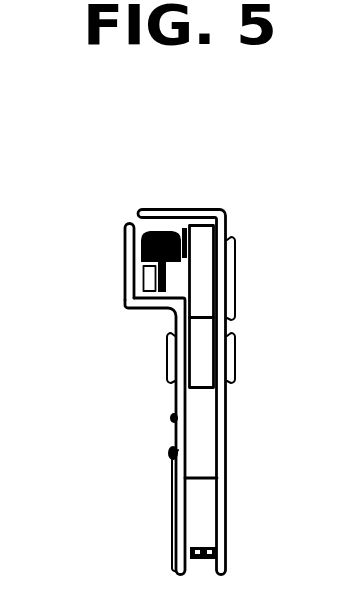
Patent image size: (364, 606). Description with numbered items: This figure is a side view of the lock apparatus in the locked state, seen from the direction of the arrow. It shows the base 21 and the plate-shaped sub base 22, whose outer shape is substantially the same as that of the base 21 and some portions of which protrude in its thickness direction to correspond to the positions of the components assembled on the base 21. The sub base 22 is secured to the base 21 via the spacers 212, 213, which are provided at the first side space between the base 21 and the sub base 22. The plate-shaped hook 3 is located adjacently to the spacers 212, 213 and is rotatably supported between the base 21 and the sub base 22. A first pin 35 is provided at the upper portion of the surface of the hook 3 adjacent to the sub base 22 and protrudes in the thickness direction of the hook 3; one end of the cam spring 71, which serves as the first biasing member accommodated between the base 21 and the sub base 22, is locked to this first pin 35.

The base 21 is at (180, 204).
The sub base 22 is at (137, 292).
The first pin 35 is at (128, 295).
The cam spring 71 is at (150, 242).
The spacer 212 is at (212, 333).
The hook 3 is at (190, 428).
The spacer 213 is at (208, 513).